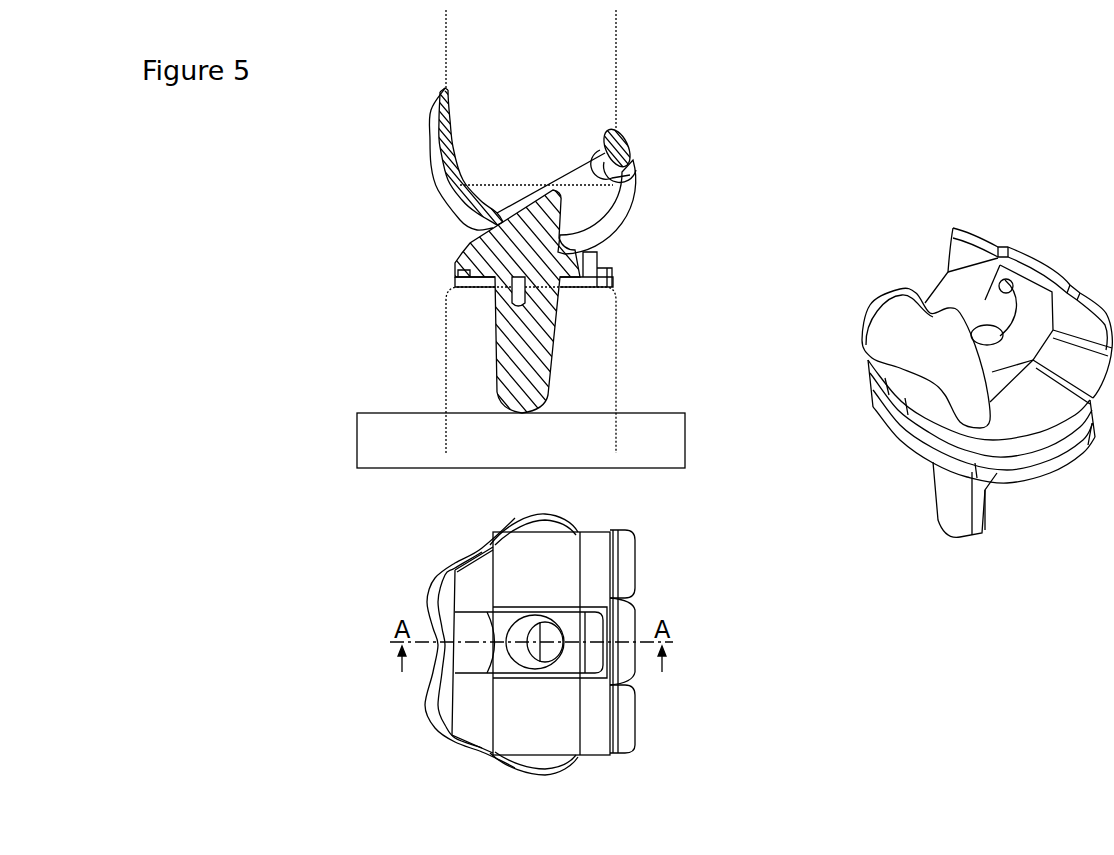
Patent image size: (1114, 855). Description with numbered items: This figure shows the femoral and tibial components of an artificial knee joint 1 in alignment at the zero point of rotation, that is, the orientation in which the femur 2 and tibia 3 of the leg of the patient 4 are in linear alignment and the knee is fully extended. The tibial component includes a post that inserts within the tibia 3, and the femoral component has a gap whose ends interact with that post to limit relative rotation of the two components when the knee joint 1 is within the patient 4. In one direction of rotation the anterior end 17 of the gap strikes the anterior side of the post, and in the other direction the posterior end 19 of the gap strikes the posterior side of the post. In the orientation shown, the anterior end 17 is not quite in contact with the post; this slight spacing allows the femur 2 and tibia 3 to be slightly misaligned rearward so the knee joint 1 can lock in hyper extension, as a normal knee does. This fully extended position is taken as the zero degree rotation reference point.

The artificial knee joint 1 is at (700, 185).
The femur 2 is at (617, 63).
The tibia 3 is at (615, 400).
The patient 4 is at (536, 113).
The anterior end of the gap 17 is at (497, 214).
The posterior end of the gap 19 is at (637, 176).